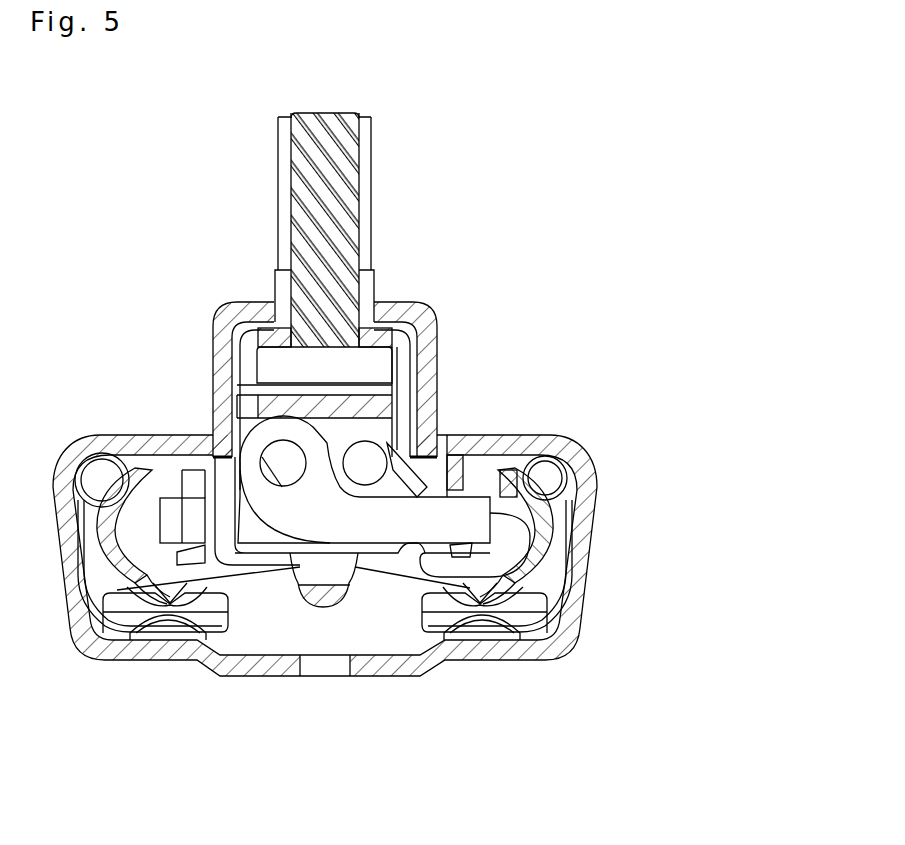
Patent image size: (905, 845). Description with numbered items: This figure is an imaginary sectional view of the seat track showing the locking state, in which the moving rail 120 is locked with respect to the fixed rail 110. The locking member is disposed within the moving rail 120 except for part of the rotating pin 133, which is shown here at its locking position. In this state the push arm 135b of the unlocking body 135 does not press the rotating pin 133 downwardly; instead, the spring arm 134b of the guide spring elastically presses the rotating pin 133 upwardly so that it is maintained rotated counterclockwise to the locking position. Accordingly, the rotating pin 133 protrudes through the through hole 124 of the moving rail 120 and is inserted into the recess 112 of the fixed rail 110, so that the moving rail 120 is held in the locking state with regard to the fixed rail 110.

The fixed rail 110 is at (604, 468).
The moving rail 120 is at (220, 308).
The unlocking body 135 is at (373, 335).
The push arm 135b is at (455, 462).
The recess 112 is at (505, 482).
The rotating pin 133 is at (555, 535).
The spring arm 134b is at (330, 553).
The through hole 124 is at (467, 588).